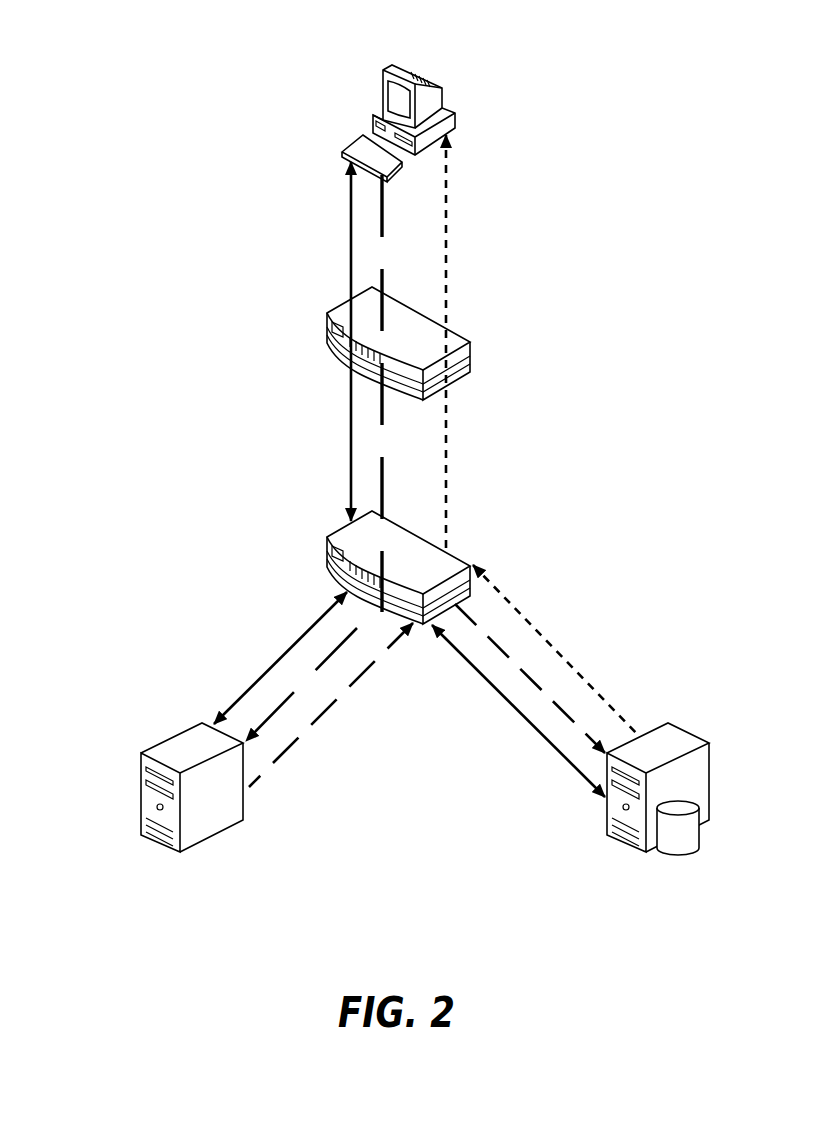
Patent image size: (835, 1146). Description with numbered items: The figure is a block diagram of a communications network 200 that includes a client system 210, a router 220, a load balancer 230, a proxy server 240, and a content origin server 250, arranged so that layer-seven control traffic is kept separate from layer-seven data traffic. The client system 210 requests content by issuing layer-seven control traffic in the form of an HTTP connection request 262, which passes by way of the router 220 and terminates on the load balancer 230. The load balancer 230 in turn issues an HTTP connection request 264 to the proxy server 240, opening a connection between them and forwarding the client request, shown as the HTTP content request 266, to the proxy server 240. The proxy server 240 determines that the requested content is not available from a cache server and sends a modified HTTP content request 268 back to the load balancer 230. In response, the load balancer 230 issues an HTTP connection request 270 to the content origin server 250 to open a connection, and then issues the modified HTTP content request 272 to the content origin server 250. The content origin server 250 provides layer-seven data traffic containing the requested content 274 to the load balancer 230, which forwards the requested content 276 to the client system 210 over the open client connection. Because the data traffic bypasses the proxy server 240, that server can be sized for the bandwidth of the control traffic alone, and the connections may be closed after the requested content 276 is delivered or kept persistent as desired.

The communications network 200 is at (62, 956).
The client system 210 is at (418, 66).
The router 220 is at (326, 318).
The load balancer 230 is at (326, 544).
The proxy server 240 is at (142, 770).
The content origin server 250 is at (711, 770).
The HTTP connection request 262 is at (350, 241).
The HTTP connection request 264 is at (275, 660).
The HTTP content request 266 is at (380, 467).
The modified HTTP content request 268 is at (320, 717).
The HTTP connection request 270 is at (478, 677).
The modified HTTP content request 272 is at (547, 697).
The requested content 274 is at (545, 645).
The requested content 276 is at (447, 468).